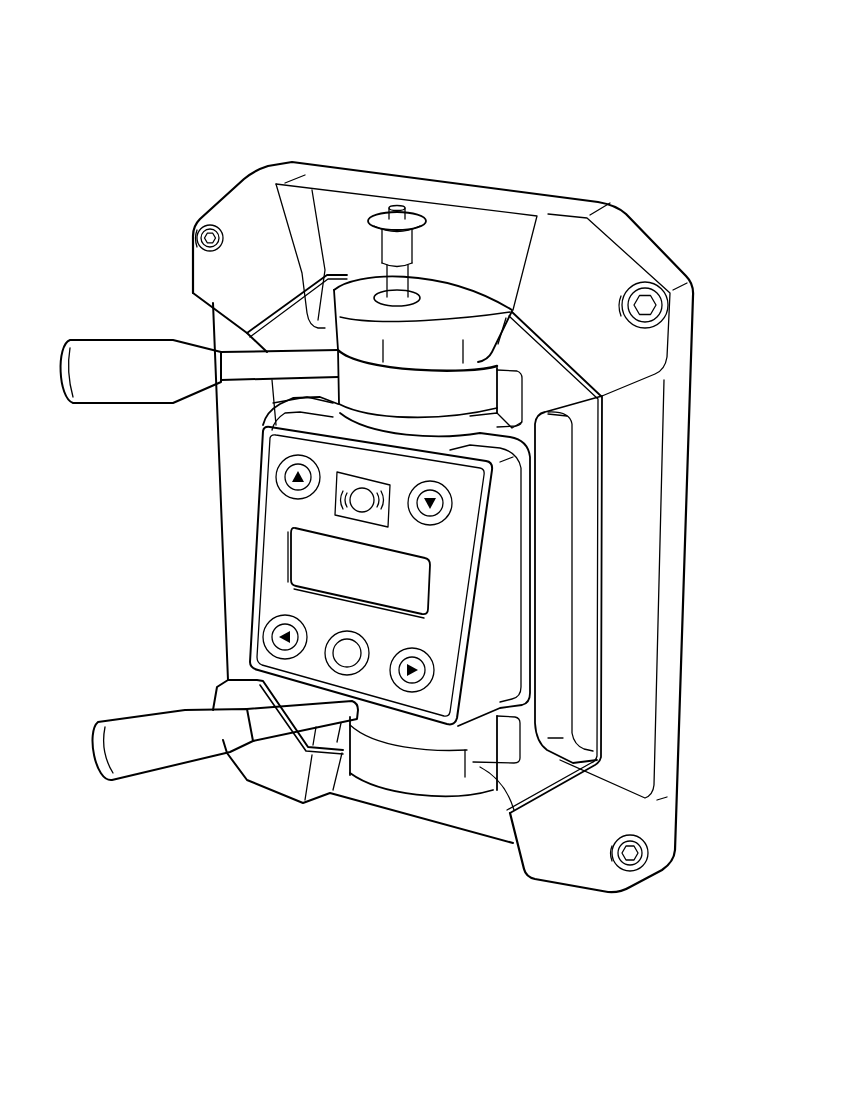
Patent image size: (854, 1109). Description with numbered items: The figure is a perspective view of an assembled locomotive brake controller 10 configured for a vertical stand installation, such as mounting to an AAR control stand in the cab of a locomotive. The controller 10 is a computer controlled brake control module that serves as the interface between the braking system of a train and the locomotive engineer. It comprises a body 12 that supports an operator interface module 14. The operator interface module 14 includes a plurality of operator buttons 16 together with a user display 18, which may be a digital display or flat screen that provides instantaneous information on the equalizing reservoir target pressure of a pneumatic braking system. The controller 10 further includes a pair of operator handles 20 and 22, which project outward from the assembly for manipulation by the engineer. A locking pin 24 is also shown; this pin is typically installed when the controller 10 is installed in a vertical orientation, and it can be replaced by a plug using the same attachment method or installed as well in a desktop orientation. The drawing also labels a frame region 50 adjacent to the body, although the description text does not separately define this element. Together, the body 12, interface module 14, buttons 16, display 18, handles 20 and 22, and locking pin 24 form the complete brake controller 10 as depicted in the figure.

The locomotive brake controller 10 is at (268, 81).
The body 12 is at (555, 503).
The operator interface module 14 is at (280, 548).
The operator buttons 16 is at (415, 682).
The user display 18 is at (372, 583).
The operator handle 20 is at (143, 723).
The operator handle 22 is at (110, 347).
The locking pin 24 is at (414, 214).
The frame 50 is at (630, 573).